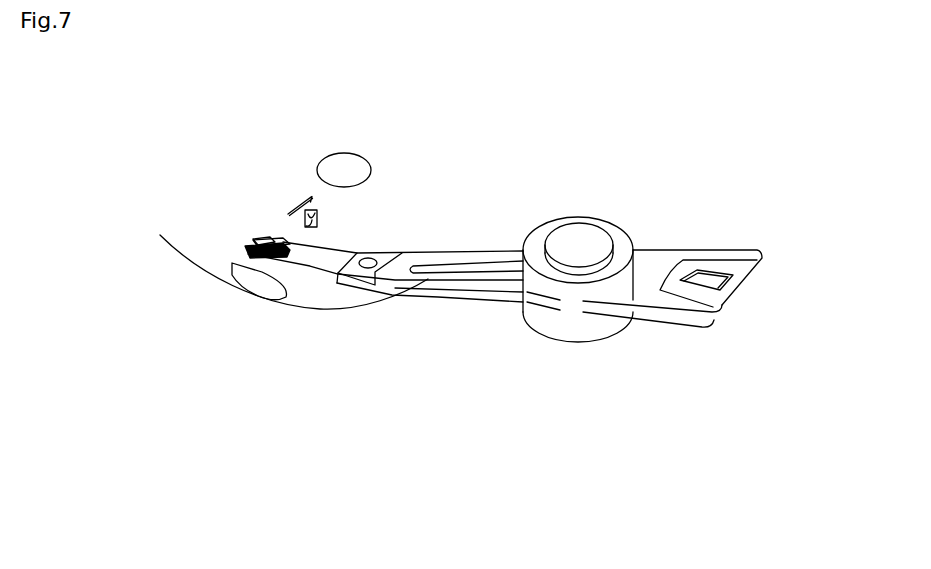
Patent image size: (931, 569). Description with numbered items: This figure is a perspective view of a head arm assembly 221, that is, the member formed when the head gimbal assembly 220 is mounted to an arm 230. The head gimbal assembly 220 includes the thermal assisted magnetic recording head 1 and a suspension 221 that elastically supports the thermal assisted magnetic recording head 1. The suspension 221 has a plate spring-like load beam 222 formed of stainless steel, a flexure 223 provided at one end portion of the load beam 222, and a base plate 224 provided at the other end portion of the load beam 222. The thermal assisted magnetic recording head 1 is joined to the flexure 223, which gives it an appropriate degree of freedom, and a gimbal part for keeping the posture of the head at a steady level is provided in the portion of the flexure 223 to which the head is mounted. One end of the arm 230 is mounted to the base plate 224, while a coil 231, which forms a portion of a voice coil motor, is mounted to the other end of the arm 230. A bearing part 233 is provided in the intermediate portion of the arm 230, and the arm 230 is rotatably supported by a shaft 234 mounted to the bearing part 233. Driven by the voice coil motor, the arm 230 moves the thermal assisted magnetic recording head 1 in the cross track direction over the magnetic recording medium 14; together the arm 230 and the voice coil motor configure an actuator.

The thermal assisted magnetic recording head 1 is at (268, 241).
The magnetic recording medium 14 is at (276, 304).
The head gimbal assembly 220 is at (330, 290).
The suspension 221 is at (488, 212).
The load beam 222 is at (356, 253).
The flexure 223 is at (248, 244).
The base plate 224 is at (401, 251).
The arm 230 is at (440, 293).
The coil 231 is at (750, 298).
The bearing part 233 is at (537, 228).
The shaft 234 is at (588, 236).